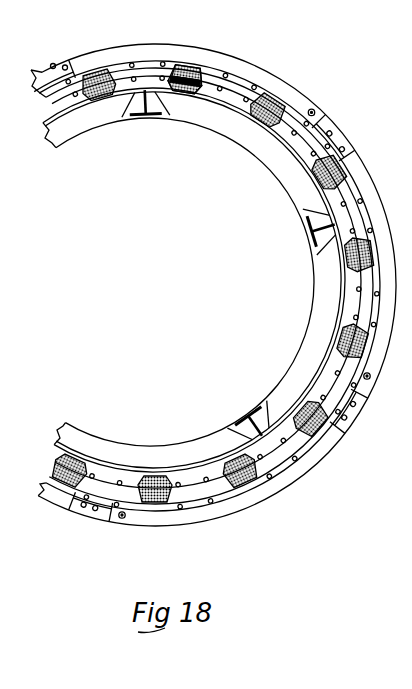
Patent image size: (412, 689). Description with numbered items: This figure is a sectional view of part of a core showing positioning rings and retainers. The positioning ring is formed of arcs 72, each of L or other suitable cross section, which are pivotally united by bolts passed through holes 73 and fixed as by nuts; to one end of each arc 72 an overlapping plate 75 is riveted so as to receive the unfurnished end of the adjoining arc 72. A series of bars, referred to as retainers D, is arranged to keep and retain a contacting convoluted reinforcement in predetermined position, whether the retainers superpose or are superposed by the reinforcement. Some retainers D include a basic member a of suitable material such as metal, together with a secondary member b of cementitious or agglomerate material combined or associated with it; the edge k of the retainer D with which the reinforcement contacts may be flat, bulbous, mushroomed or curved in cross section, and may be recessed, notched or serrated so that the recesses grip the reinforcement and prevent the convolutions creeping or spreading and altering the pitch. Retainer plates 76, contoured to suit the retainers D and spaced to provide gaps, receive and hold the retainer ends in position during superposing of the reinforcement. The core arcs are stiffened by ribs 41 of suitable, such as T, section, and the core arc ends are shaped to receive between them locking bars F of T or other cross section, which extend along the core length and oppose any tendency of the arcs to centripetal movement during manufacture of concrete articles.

The arc 72 is at (232, 62).
The retainer plate 76 is at (272, 96).
The retainer D is at (100, 66).
The basic member a is at (187, 66).
The edge k is at (194, 66).
The secondary member b is at (208, 68).
The overlapping plate 75 is at (346, 136).
The hole 73 is at (315, 112).
The rib 41 is at (194, 280).
The locking bar F is at (231, 269).